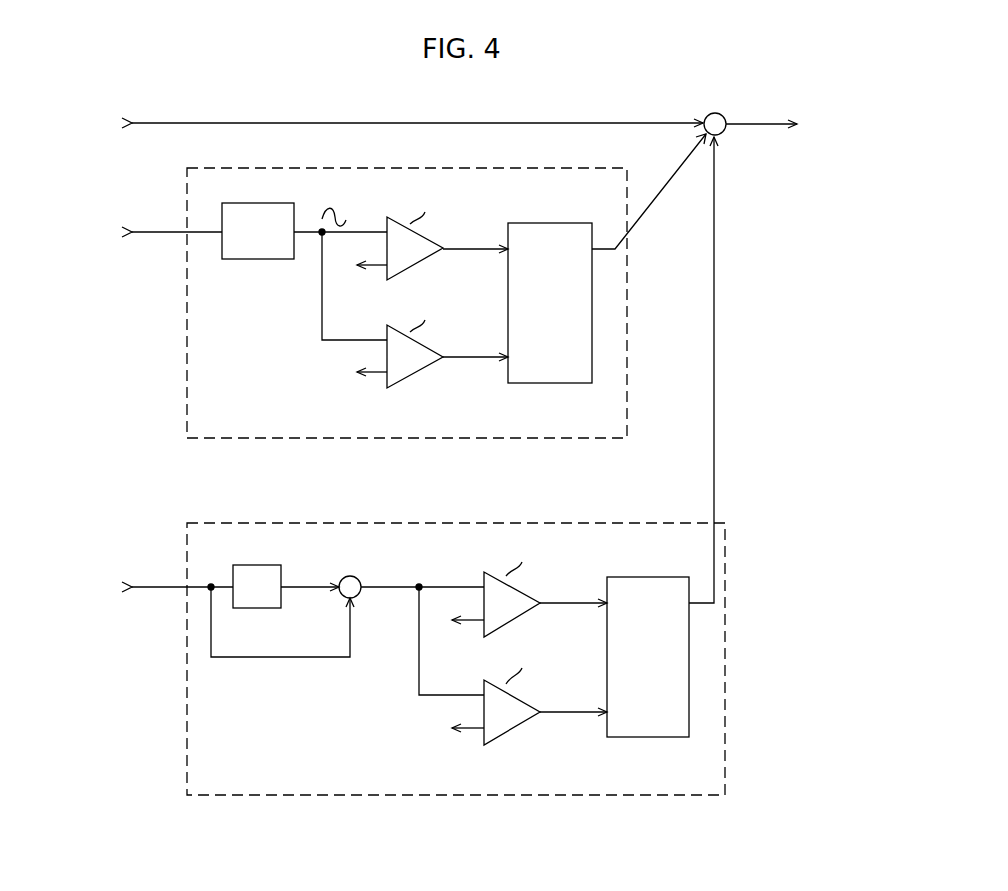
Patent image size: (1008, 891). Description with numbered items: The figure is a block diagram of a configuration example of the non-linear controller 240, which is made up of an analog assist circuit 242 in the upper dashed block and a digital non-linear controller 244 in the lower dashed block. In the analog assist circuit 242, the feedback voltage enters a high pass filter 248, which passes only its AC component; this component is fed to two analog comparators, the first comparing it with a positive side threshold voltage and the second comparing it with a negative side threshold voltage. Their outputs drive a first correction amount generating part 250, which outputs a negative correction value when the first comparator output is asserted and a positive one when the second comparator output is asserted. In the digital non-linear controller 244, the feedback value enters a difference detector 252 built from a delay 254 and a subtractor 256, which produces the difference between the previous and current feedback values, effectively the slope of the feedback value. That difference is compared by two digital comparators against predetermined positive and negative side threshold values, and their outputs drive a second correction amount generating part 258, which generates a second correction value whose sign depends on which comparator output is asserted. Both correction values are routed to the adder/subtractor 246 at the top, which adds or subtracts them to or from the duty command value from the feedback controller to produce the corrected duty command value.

The non-linear controller 240 is at (461, 851).
The analog assist circuit 242 is at (186, 385).
The digital non-linear controller 244 is at (186, 738).
The adder/subtractor 246 is at (717, 113).
The high pass filter 248 is at (250, 259).
The first correction amount generating part 250 is at (562, 222).
The difference detector 252 is at (302, 632).
The delay 254 is at (260, 565).
The subtractor 256 is at (352, 575).
The second correction amount generating part 258 is at (650, 577).